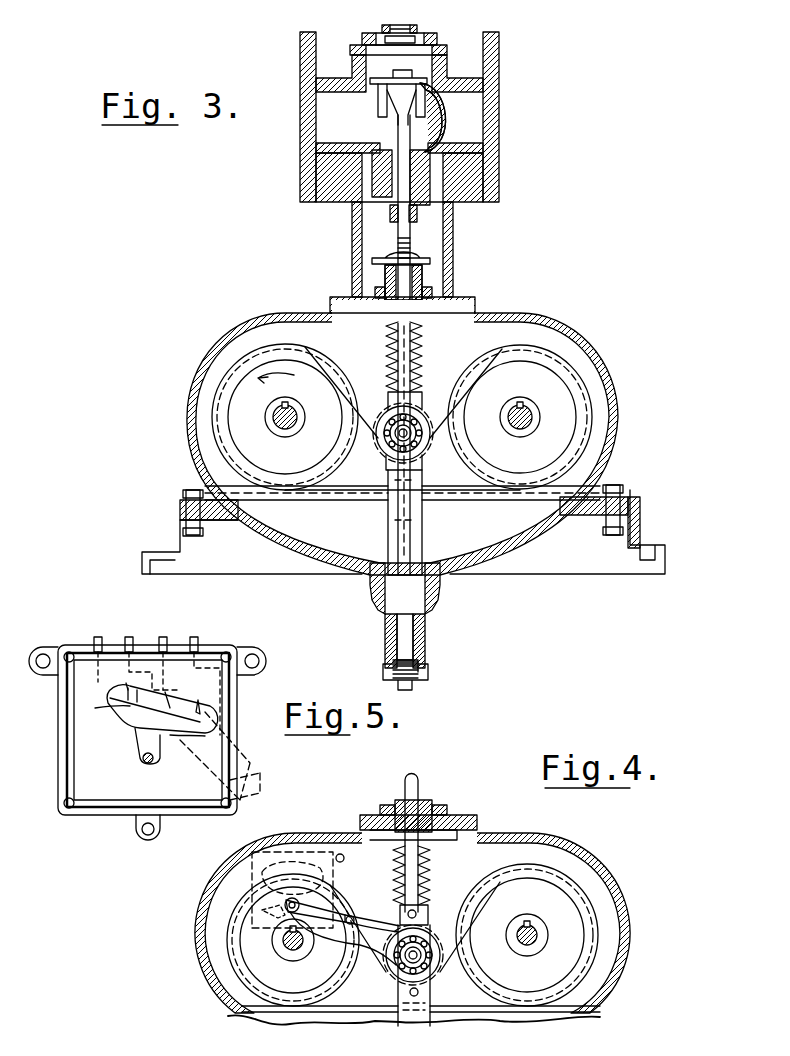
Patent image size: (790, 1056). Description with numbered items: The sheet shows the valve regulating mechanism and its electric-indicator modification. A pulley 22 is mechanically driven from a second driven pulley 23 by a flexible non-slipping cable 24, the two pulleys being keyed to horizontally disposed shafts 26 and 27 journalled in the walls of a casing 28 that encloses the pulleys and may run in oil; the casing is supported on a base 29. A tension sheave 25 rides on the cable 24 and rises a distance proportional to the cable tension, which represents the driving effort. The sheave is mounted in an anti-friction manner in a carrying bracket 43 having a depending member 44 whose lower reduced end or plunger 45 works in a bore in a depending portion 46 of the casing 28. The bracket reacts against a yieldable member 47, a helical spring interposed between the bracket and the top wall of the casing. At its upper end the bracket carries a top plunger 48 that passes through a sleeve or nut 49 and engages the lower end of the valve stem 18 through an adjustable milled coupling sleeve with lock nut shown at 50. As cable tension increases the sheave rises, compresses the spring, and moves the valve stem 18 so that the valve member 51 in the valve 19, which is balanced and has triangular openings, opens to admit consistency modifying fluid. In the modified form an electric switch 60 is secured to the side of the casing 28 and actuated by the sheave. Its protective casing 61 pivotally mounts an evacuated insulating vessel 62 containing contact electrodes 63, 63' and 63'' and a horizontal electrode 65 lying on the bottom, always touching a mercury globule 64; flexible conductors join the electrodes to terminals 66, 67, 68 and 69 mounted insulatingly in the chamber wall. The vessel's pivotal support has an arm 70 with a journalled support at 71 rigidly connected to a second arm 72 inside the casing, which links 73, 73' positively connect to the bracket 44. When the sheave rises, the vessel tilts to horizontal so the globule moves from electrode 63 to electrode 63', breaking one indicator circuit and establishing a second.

In FIG. 3, the valve stem 18 is at (410, 232).
In FIG. 4, the valve stem 18 is at (420, 790).
In FIG. 3, the valve 19 is at (445, 72).
In FIG. 3, the pulley 22 is at (555, 358).
In FIG. 4, the pulley 22 is at (583, 890).
In FIG. 3, the driven pulley 23 is at (232, 370).
In FIG. 4, the driven pulley 23 is at (222, 948).
In FIG. 3, the cable 24 is at (456, 488).
In FIG. 4, the cable 24 is at (462, 1014).
In FIG. 3, the tension sheave 25 is at (424, 405).
In FIG. 3, the shaft 26 is at (527, 410).
In FIG. 4, the shaft 26 is at (526, 948).
In FIG. 3, the shaft 27 is at (297, 422).
In FIG. 4, the shaft 27 is at (291, 950).
In FIG. 3, the casing 28 is at (618, 428).
In FIG. 4, the casing 28 is at (630, 926).
In FIG. 3, the base 29 is at (640, 530).
In FIG. 3, the carrying bracket 43 is at (384, 448).
In FIG. 3, the depending member 44 is at (390, 514).
In FIG. 4, the depending member 44 is at (400, 1015).
In FIG. 3, the plunger 45 is at (398, 638).
In FIG. 3, the depending portion 46 is at (430, 624).
In FIG. 3, the yieldable member 47 is at (387, 358).
In FIG. 4, the yieldable member 47 is at (432, 866).
In FIG. 3, the top plunger 48 is at (426, 290).
In FIG. 3, the sleeve or nut 49 is at (384, 283).
In FIG. 4, the sleeve or nut 49 is at (432, 812).
In FIG. 3, the milled coupling sleeve 50 is at (385, 270).
In FIG. 3, the valve member 51 is at (425, 100).
In FIG. 4, the electric switch 60 is at (300, 850).
In FIG. 5, the protective casing 61 is at (216, 650).
In FIG. 5, the evacuated insulating vessel 62 is at (105, 728).
In FIG. 5, the contact electrode 63 is at (219, 705).
In FIG. 5, the contact electrode 63' is at (199, 696).
In FIG. 5, the contact electrode 63'' is at (100, 692).
In FIG. 5, the contact making globule 64 is at (215, 756).
In FIG. 5, the horizontal electrode 65 is at (110, 722).
In FIG. 5, the terminal 66 is at (194, 636).
In FIG. 5, the terminal 67 is at (163, 636).
In FIG. 5, the terminal 68 is at (129, 636).
In FIG. 5, the terminal 69 is at (98, 636).
In FIG. 5, the arm 70 is at (138, 748).
In FIG. 5, the journalled support 71 is at (146, 765).
In FIG. 5, the second arm 72 is at (260, 786).
In FIG. 4, the second arm 72 is at (335, 912).
In FIG. 4, the link 73 is at (343, 909).
In FIG. 4, the link 73' is at (435, 899).